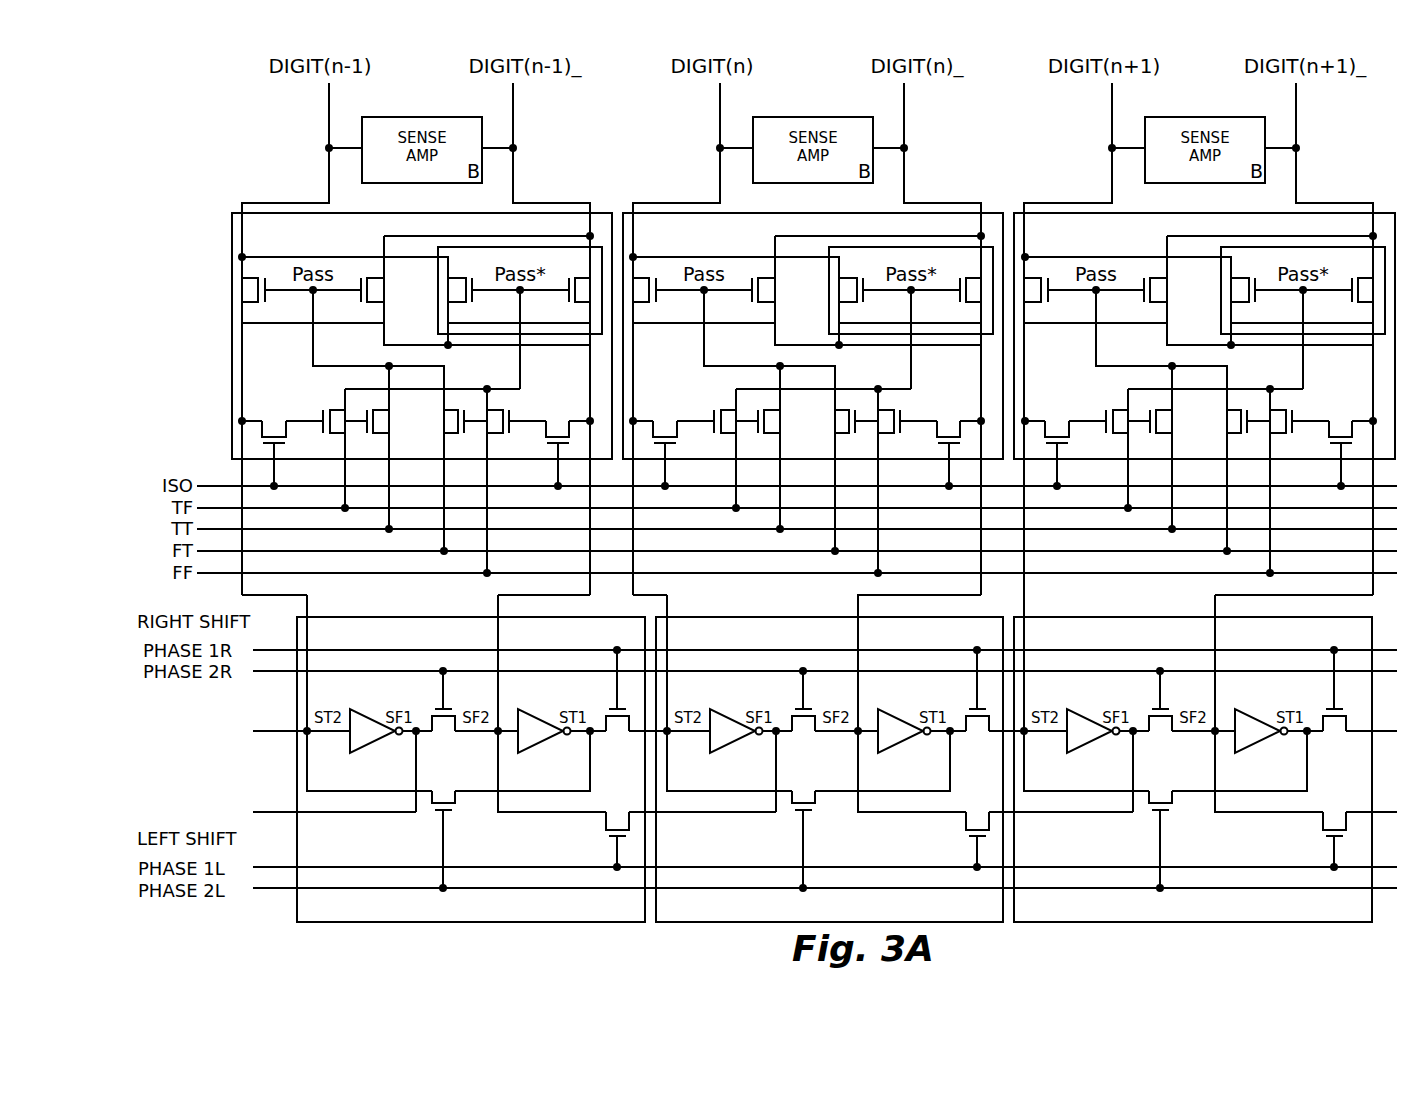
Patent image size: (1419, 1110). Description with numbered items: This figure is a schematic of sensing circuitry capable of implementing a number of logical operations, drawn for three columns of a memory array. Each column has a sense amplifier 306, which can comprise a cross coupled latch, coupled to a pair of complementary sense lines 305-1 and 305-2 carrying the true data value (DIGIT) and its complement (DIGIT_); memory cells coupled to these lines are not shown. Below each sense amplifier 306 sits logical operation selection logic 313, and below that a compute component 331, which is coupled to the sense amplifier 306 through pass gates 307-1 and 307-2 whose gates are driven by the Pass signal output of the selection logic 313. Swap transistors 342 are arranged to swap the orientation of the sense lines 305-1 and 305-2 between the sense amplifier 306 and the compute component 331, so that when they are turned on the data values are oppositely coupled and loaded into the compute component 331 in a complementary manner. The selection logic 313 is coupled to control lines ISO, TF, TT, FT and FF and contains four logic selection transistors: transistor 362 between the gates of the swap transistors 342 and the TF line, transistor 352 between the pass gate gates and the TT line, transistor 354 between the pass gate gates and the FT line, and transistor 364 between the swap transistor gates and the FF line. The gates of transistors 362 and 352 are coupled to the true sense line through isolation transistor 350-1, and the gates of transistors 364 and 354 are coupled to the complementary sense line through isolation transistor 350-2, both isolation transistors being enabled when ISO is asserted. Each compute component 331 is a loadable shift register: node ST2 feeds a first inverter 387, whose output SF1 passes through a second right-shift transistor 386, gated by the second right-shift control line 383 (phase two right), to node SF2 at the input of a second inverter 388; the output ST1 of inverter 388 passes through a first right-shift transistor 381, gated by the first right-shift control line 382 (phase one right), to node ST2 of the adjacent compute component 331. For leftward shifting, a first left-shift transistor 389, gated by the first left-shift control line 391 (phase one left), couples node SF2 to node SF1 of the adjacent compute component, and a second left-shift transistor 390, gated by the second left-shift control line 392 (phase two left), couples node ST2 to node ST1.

The sense amplifier 306 is at (813, 136).
The sense line 305-1 is at (677, 339).
The complementary sense line 305-2 is at (943, 339).
The logical operation selection logic 313 is at (813, 323).
The pass gate 307-1 is at (216, 280).
The pass gate 307-2 is at (339, 267).
The swap transistors 342 is at (535, 237).
The isolation transistor 350-1 is at (284, 407).
The isolation transistor 350-2 is at (556, 407).
The logic selection transistor 352 is at (399, 413).
The logic selection transistor 354 is at (433, 431).
The logic selection transistor 362 is at (344, 382).
The logic selection transistor 364 is at (489, 392).
The compute component 331 is at (834, 785).
The first right-shift control line 382 is at (825, 636).
The second right-shift control line 383 is at (825, 685).
The first left-shift control line 391 is at (825, 854).
The second left-shift control line 392 is at (825, 902).
The first inverter 387 is at (739, 741).
The second inverter 388 is at (907, 741).
The second right-shift transistor 386 is at (818, 733).
The second left-shift transistor 390 is at (818, 786).
The first right-shift transistor 381 is at (977, 736).
The first left-shift transistor 389 is at (977, 809).